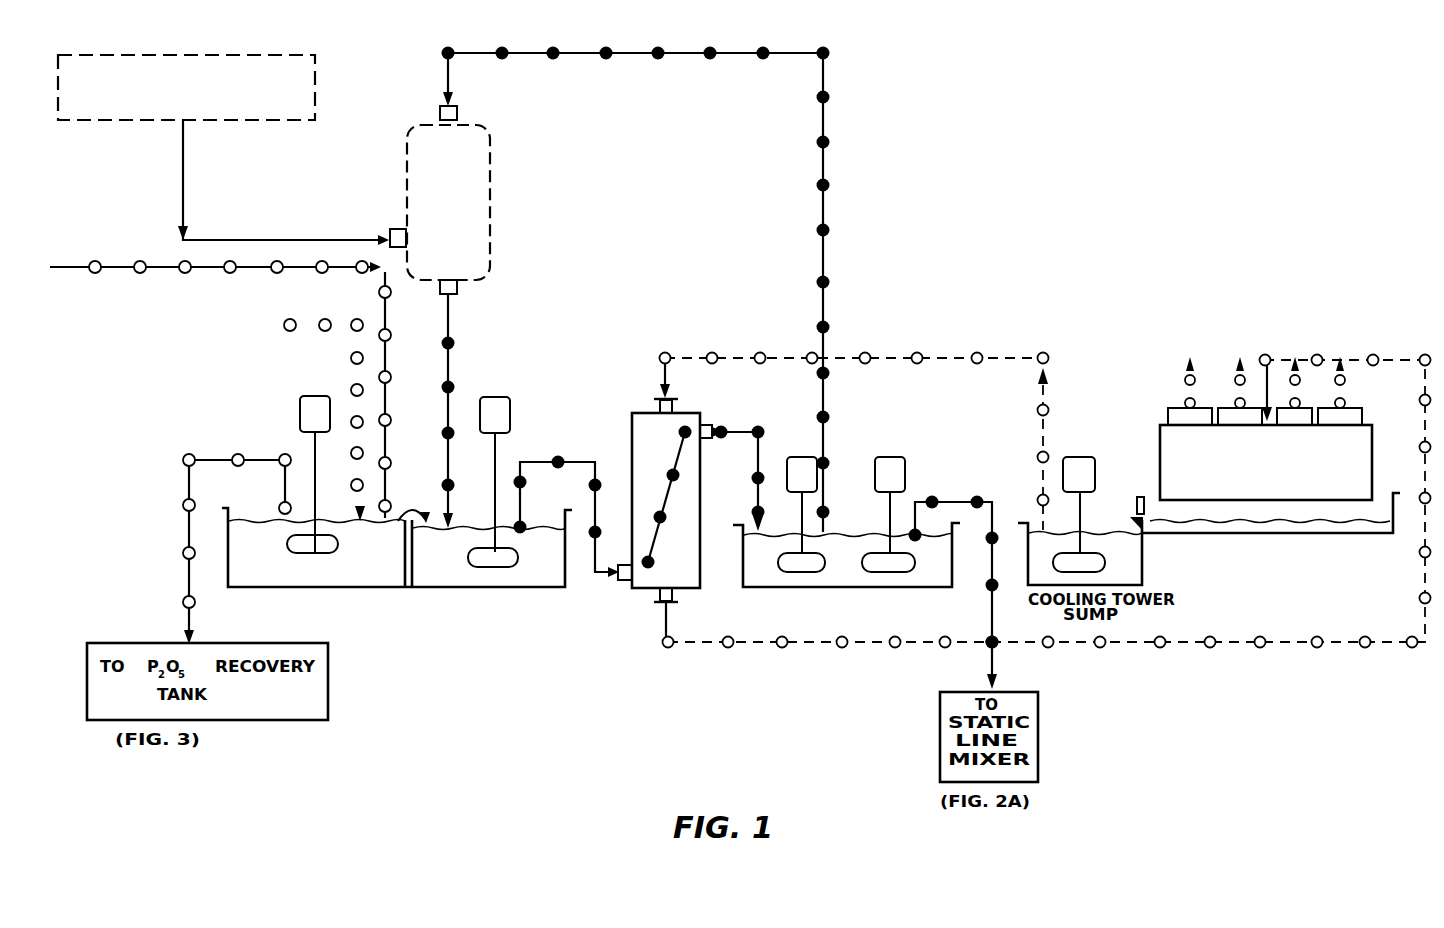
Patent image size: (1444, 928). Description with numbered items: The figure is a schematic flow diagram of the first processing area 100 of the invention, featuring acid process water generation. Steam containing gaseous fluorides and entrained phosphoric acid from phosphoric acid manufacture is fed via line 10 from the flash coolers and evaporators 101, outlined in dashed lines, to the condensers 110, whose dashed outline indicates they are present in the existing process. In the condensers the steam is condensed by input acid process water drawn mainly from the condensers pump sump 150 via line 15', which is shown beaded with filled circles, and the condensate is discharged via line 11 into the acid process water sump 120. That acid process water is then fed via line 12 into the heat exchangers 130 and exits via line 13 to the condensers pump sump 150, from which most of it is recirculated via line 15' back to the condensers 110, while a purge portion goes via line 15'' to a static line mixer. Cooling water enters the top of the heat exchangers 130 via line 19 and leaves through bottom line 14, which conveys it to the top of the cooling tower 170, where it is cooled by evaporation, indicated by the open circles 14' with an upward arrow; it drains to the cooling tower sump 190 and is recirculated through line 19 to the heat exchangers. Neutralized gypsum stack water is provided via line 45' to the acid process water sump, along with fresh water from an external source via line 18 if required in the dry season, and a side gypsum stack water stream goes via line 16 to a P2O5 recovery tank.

The first processing area 100 is at (966, 257).
The flash coolers and evaporators 101 is at (305, 55).
The line 10 is at (186, 212).
The condensers 110 is at (490, 150).
The line 15' is at (662, 269).
The line 45' is at (220, 382).
The line 18 is at (351, 361).
The line 16 is at (189, 553).
The acid process water sump 120 is at (555, 592).
The line 11 is at (449, 371).
The line 12 is at (533, 462).
The heat exchangers 130 is at (632, 432).
The line 13 is at (740, 432).
The condensers pump sump 150 is at (867, 593).
The line 19 is at (945, 355).
The line 15'' is at (1017, 449).
The cooling tower sump 190 is at (1012, 588).
The line 14 is at (1047, 495).
The cooling tower 170 is at (1160, 428).
The open circles 14' is at (1298, 383).